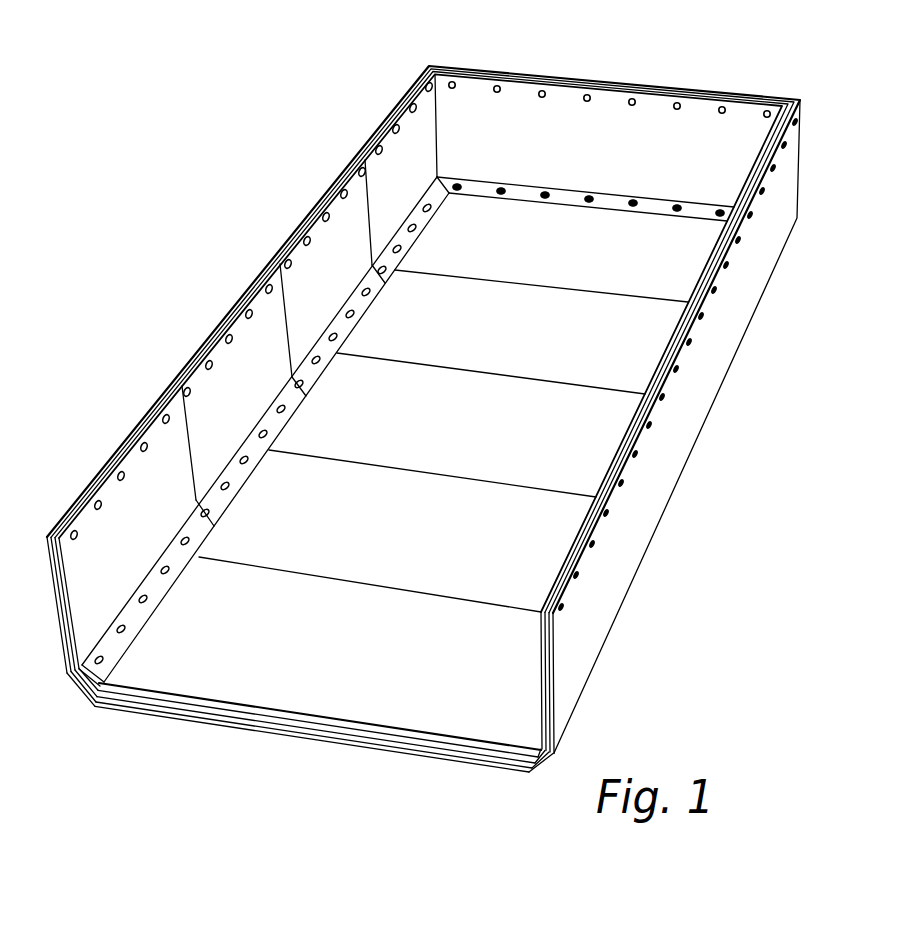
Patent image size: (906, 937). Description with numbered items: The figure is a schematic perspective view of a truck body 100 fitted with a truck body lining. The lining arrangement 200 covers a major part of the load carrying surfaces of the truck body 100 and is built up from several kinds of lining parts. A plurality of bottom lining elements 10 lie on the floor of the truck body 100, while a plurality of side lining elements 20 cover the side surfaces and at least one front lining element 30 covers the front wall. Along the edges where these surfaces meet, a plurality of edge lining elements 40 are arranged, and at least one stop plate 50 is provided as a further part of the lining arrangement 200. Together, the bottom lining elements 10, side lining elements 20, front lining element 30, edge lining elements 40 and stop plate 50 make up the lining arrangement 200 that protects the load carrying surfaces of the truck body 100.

The truck body 100 is at (150, 91).
The bottom lining elements 10 is at (243, 678).
The side lining elements 20 is at (110, 493).
The front lining element 30 is at (552, 122).
The edge lining elements 40 is at (238, 470).
The stop plate 50 is at (315, 730).
The lining arrangement 200 is at (268, 268).